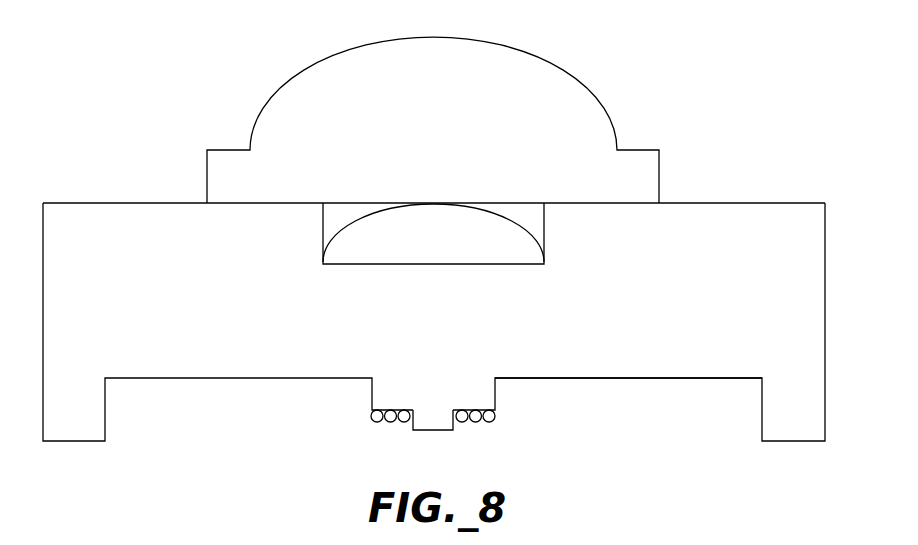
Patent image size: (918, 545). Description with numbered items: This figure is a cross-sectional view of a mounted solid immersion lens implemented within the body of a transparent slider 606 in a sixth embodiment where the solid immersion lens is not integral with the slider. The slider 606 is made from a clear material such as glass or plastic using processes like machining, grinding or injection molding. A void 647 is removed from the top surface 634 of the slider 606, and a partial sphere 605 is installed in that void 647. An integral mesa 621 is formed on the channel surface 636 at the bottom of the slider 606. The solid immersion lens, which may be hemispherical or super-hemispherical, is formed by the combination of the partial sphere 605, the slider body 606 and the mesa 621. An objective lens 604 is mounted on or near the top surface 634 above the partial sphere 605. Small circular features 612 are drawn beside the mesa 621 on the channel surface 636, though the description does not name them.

The objective lens 604 is at (467, 126).
The partial sphere 605 is at (468, 244).
The slider 606 is at (710, 190).
The coil windings 612 is at (375, 418).
The mesa 621 is at (432, 424).
The top surface 634 is at (75, 202).
The channel surface 636 is at (679, 380).
The void 647 is at (330, 226).